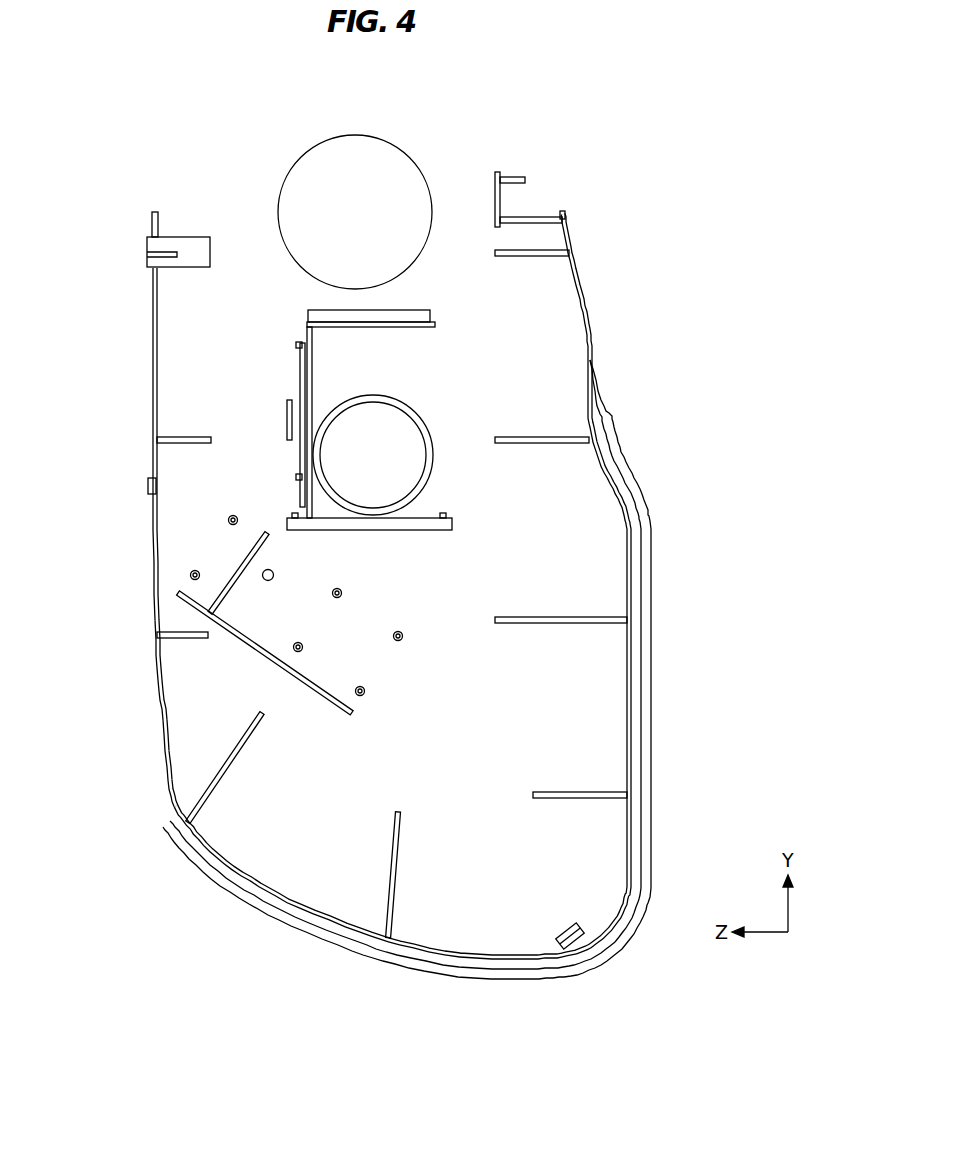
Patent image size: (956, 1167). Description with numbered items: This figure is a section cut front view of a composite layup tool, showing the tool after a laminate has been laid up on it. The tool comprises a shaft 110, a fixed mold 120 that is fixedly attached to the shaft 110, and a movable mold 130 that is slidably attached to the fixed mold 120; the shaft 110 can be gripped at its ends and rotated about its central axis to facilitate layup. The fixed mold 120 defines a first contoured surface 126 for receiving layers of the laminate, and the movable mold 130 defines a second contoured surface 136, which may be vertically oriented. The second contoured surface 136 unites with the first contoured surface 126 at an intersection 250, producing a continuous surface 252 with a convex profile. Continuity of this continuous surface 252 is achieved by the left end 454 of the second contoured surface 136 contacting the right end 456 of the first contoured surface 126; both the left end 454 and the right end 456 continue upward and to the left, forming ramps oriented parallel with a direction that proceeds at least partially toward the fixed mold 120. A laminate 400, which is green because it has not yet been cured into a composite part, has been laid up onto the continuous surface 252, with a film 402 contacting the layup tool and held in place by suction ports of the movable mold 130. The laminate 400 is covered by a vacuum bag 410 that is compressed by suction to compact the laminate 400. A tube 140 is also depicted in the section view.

The shaft 110 is at (422, 421).
The fixed mold 120 is at (125, 537).
The first contoured surface 126 is at (148, 671).
The movable mold 130 is at (594, 350).
The second contoured surface 136 is at (594, 277).
The tube 140 is at (280, 183).
The intersection 250 is at (543, 905).
The continuous surface 252 is at (533, 1019).
The laminate 400 is at (444, 669).
The film 402 is at (628, 595).
The vacuum bag 410 is at (652, 688).
The left end of second contoured surface 454 is at (577, 933).
The right end of first contoured surface 456 is at (556, 942).